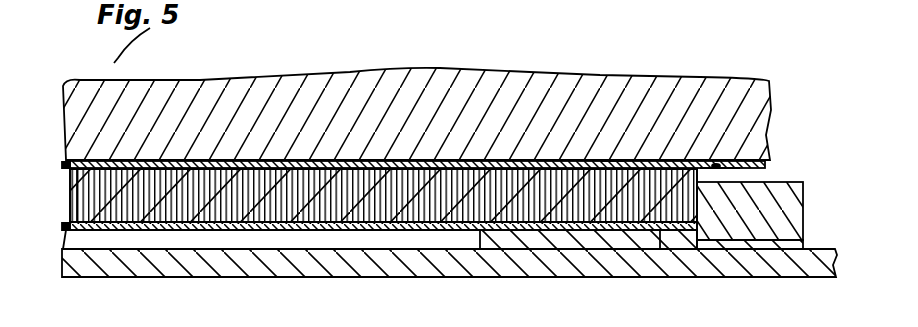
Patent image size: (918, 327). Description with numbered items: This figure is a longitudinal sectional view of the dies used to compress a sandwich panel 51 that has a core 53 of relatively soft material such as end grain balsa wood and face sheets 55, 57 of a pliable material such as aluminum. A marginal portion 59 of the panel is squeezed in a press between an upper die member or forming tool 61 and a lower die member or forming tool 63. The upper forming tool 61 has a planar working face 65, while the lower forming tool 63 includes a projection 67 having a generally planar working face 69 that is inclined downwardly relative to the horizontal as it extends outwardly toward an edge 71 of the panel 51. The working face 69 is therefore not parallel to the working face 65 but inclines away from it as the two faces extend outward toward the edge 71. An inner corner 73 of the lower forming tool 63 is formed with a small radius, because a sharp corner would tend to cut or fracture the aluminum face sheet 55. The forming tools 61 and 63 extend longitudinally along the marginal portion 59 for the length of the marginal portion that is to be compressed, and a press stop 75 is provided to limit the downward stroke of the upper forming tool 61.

The sandwich panel 51 is at (68, 194).
The core 53 is at (82, 207).
The face sheet 55 is at (70, 165).
The face sheet 57 is at (64, 230).
The marginal portion 59 is at (612, 160).
The upper die member or forming tool 61 is at (752, 108).
The lower die member or forming tool 63 is at (613, 250).
The planar working face 65 is at (740, 168).
The projection 67 is at (512, 240).
The working face 69 is at (684, 237).
The edge 71 is at (718, 165).
The inner corner 73 is at (485, 222).
The press stop 75 is at (790, 222).